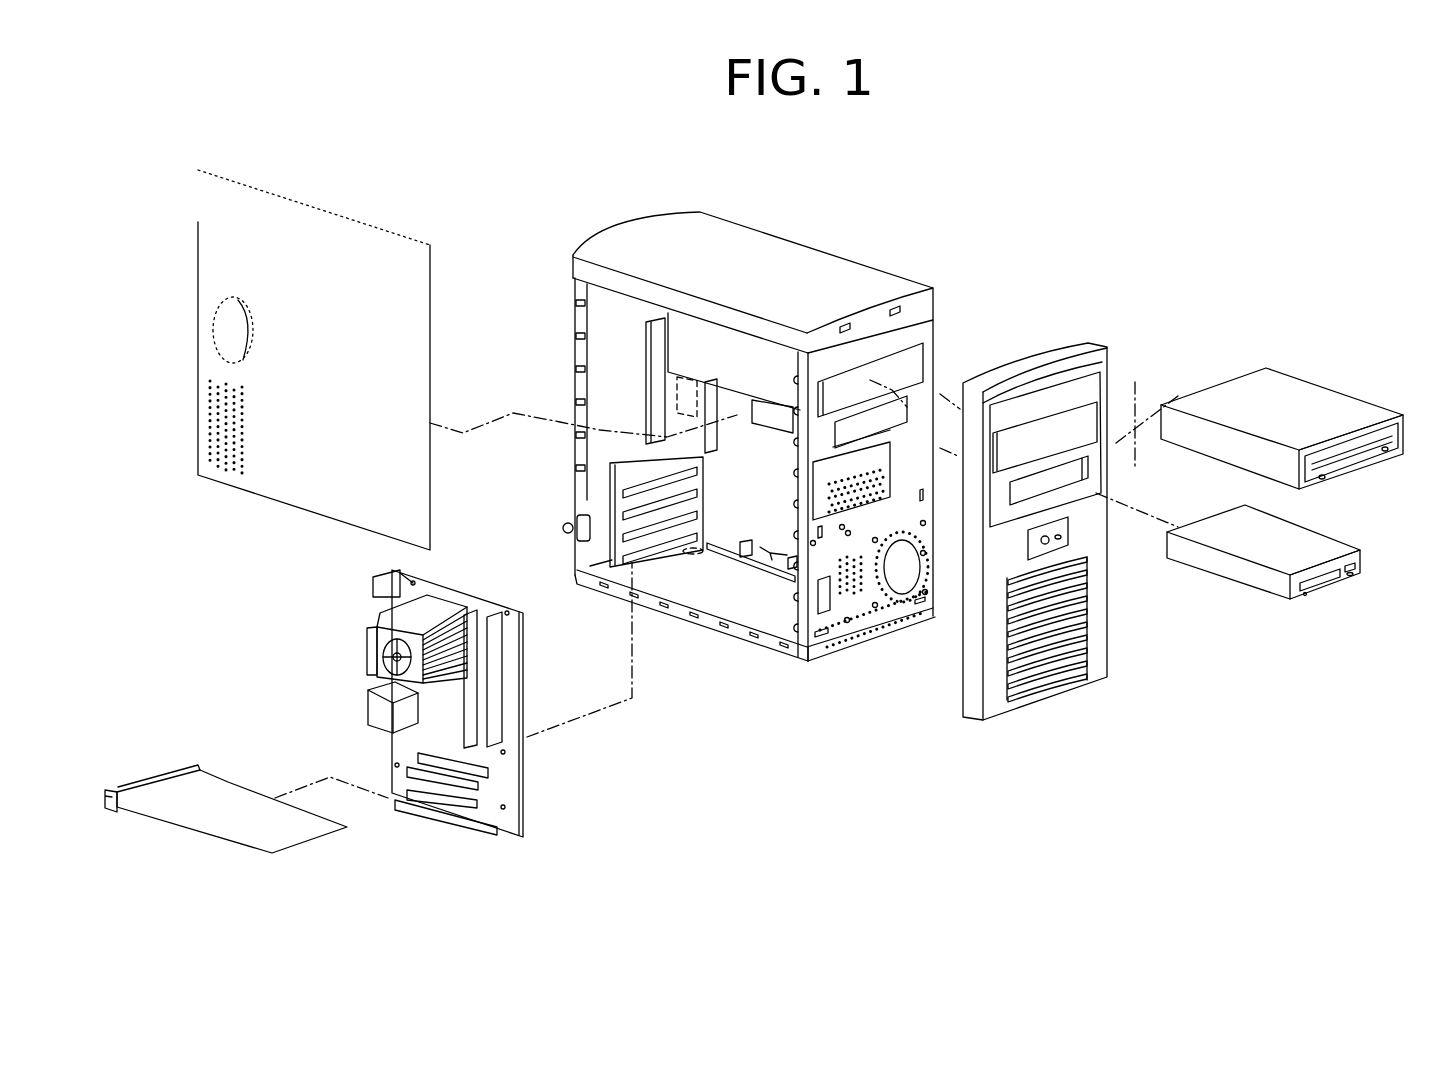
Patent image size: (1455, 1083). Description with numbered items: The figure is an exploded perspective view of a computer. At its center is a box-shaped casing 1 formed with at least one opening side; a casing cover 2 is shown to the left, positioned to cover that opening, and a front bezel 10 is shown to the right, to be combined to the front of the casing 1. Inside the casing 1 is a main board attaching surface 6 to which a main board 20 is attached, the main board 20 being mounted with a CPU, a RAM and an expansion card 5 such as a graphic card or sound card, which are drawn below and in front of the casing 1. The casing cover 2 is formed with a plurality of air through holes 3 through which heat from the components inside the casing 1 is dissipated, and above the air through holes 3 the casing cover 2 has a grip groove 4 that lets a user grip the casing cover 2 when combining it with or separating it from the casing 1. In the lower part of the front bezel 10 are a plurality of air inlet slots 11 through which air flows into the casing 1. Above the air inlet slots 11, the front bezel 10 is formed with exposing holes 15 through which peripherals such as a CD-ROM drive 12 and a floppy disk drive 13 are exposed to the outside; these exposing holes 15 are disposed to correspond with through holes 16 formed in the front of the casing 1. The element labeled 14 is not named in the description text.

The casing 1 is at (785, 438).
The casing cover 2 is at (269, 360).
The air through holes 3 is at (198, 447).
The grip groove 4 is at (198, 342).
The expansion card 5 is at (213, 838).
The main board attaching surface 6 is at (753, 567).
The front bezel 10 is at (1066, 550).
The air inlet slots 11 is at (1084, 636).
The CD-ROM drive 12 is at (1325, 381).
The floppy disk drive 13 is at (1306, 542).
The floppy drive front bezel 14 is at (1364, 560).
The exposing holes 15 is at (1073, 411).
The through holes 16 is at (908, 340).
The main board 20 is at (535, 770).